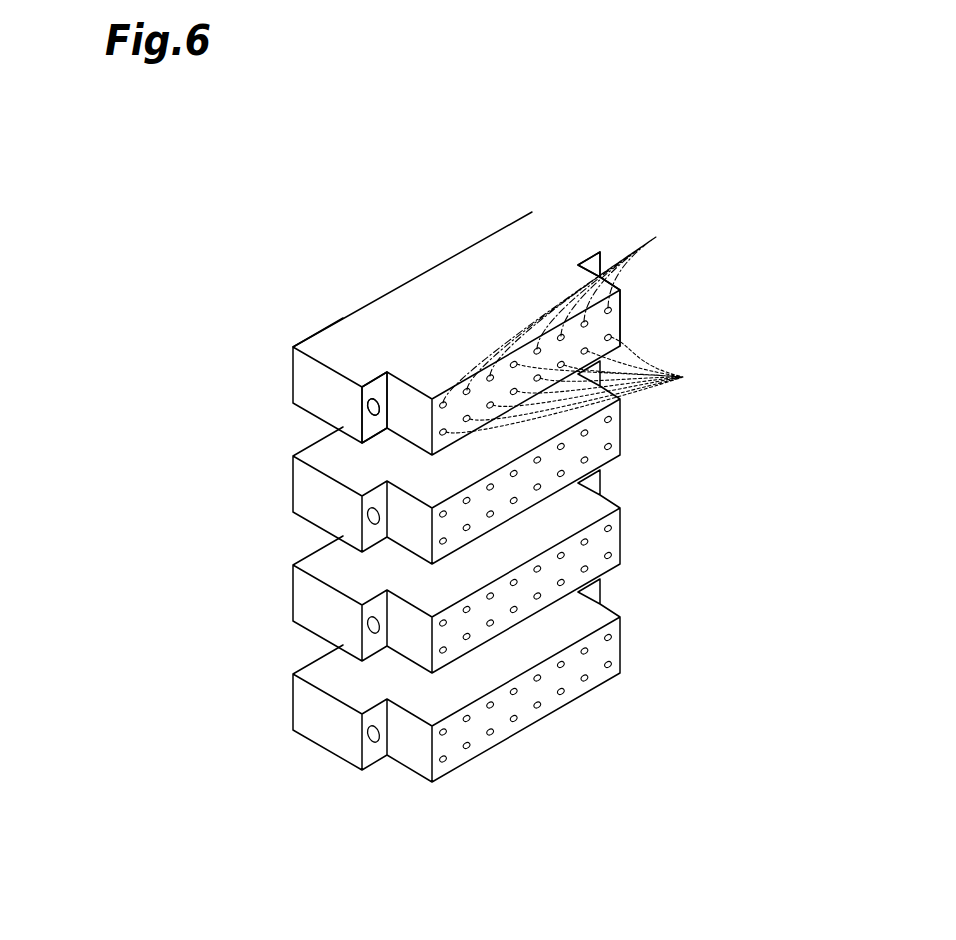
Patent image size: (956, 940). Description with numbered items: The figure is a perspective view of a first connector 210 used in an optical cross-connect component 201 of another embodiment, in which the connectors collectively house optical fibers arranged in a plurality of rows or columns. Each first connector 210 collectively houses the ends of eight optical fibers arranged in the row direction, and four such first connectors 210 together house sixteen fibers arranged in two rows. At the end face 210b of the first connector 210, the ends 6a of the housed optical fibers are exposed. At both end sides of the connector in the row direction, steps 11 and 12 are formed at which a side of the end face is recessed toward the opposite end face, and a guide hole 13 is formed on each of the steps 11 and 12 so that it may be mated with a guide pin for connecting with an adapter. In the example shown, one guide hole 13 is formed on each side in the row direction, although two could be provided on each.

The optical cross-connect component 201 is at (685, 122).
The first connector 210 is at (552, 223).
The end face 210b is at (614, 324).
The step 11 is at (603, 265).
The step 12 is at (365, 408).
The guide hole 13 is at (371, 417).
The ends of the optical fibers 6a is at (603, 321).